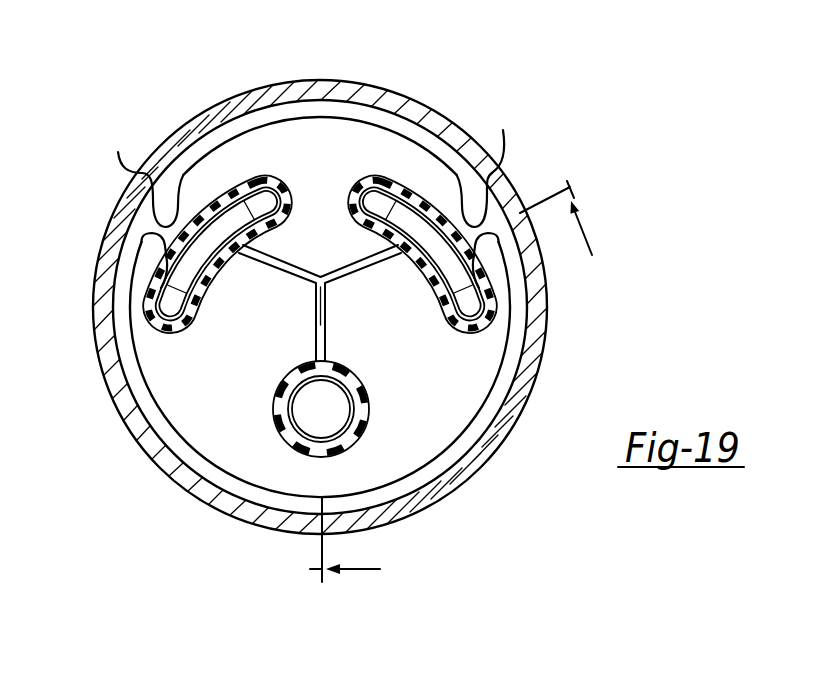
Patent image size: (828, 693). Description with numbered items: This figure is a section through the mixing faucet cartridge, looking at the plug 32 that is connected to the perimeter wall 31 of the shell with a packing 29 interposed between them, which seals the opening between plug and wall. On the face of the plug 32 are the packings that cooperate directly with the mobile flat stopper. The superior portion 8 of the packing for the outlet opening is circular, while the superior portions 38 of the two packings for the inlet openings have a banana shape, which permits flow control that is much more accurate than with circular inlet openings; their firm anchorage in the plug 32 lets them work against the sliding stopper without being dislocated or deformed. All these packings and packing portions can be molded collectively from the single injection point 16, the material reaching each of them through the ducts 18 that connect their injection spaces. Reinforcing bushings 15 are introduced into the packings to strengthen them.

The superior portion 8 is at (361, 390).
The reinforcing bushing 15 is at (266, 197).
The injection point 16 is at (322, 277).
The duct 18 is at (367, 364).
The packing 29 is at (127, 363).
The perimeter wall 31 is at (537, 357).
The plug 32 is at (463, 400).
The superior portion 38 is at (205, 304).